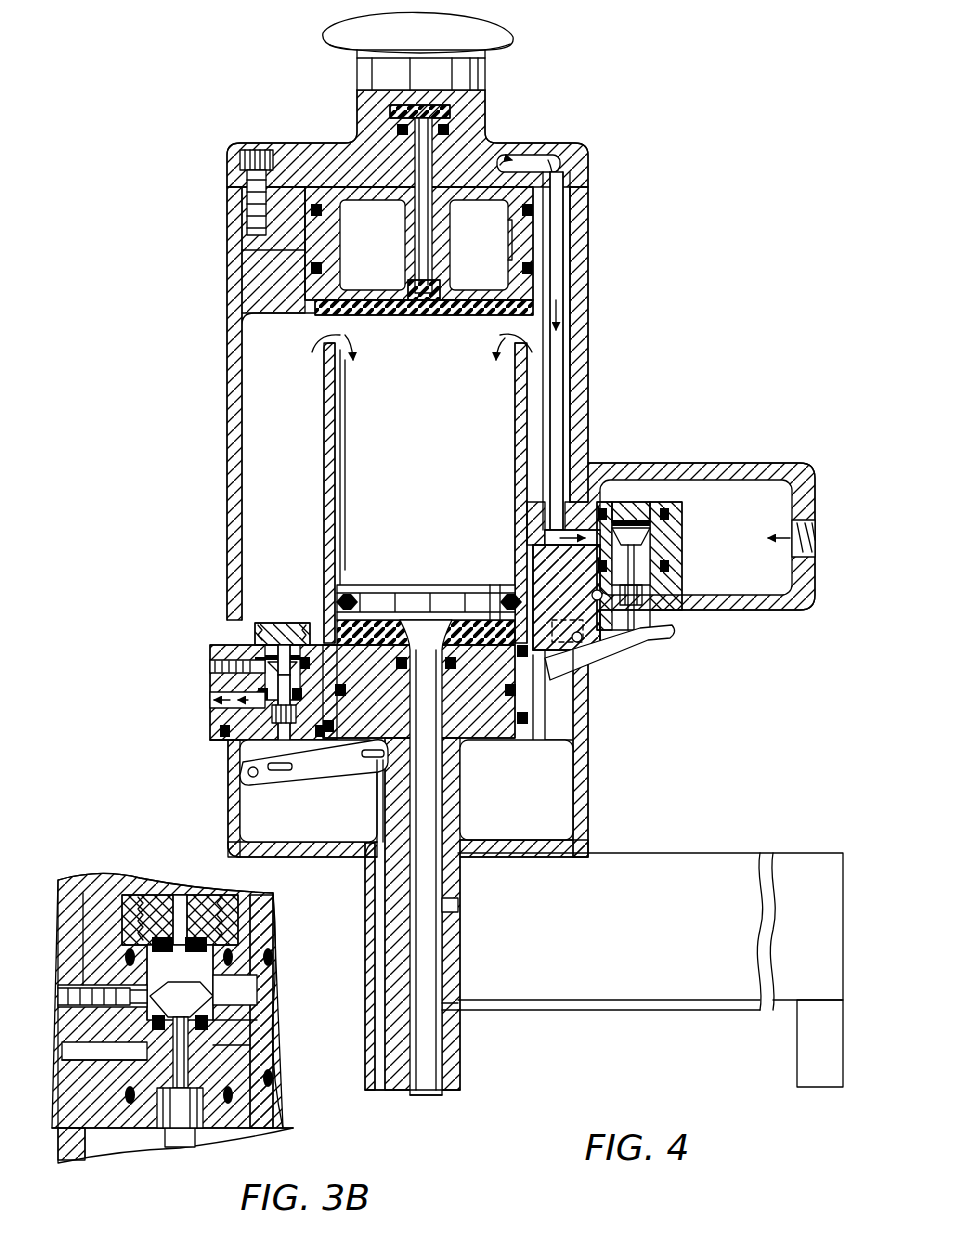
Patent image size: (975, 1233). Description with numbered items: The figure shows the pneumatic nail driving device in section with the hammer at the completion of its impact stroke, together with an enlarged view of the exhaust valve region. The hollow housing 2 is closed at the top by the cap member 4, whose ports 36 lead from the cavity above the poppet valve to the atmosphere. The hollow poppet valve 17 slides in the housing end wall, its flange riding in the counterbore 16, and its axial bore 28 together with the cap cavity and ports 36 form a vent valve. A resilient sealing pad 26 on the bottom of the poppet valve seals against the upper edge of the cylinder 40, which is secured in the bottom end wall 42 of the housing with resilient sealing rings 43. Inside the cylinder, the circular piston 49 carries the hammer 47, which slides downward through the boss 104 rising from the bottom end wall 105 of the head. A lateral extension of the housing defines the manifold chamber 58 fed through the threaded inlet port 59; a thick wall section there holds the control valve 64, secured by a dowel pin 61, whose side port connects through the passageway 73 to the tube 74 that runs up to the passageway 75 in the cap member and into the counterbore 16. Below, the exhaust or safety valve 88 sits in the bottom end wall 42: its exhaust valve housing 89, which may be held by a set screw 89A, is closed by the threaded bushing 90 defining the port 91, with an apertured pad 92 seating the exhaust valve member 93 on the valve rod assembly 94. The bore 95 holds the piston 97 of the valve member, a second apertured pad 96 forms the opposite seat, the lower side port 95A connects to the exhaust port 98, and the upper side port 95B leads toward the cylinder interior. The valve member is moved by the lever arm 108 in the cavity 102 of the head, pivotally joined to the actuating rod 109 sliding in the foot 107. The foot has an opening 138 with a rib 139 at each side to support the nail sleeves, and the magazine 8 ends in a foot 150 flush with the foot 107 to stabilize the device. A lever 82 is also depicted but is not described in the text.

In FIG. 4, the hollow housing 2 is at (226, 373).
In FIG. 4, the cap member 4 is at (302, 140).
In FIG. 4, the passageways or ports 36 is at (490, 112).
In FIG. 4, the counterbore 16 is at (305, 215).
In FIG. 4, the passageway or cavity 75 is at (553, 155).
In FIG. 4, the hollow poppet valve 17 is at (538, 282).
In FIG. 4, the axial bore 28 is at (421, 230).
In FIG. 4, the circular resilient sealing pad 26 is at (320, 318).
In FIG. 4, the tube 74 is at (565, 405).
In FIG. 4, the cylinder 40 is at (322, 432).
In FIG. 3B, the cylinder 40 is at (292, 1117).
In FIG. 4, the manifold chamber 58 is at (752, 490).
In FIG. 4, the inlet port 59 is at (812, 530).
In FIG. 4, the passageway 73 is at (557, 540).
In FIG. 4, the control valve 64 is at (668, 537).
In FIG. 4, the circular piston 49 is at (400, 588).
In FIG. 4, the dowel pin 61 is at (594, 596).
In FIG. 4, the resilient sealing rings 43 is at (582, 718).
In FIG. 4, the lever 82 is at (660, 632).
In FIG. 4, the hammer or driving member 47 is at (430, 1040).
In FIG. 4, the exhaust or safety valve 88 is at (230, 660).
In FIG. 3B, the exhaust or safety valve 88 is at (115, 905).
In FIG. 4, the threaded bushing 90 is at (268, 628).
In FIG. 3B, the threaded bushing 90 is at (150, 903).
In FIG. 4, the port or orifice 91 is at (285, 625).
In FIG. 3B, the port or orifice 91 is at (177, 903).
In FIG. 4, the set screw 89A is at (215, 690).
In FIG. 3B, the set screw 89A is at (102, 990).
In FIG. 4, the exhaust port 98 is at (232, 712).
In FIG. 3B, the exhaust port 98 is at (85, 1050).
In FIG. 4, the valve rod assembly 94 is at (290, 753).
In FIG. 3B, the valve rod assembly 94 is at (178, 1140).
In FIG. 4, the cavity 102 is at (255, 800).
In FIG. 4, the boss 104 is at (460, 800).
In FIG. 4, the bottom end wall 105 is at (545, 835).
In FIG. 4, the lever arm 108 is at (314, 770).
In FIG. 4, the actuating rod 109 is at (380, 790).
In FIG. 4, the magazine 8 is at (710, 852).
In FIG. 4, the foot 150 is at (832, 1058).
In FIG. 4, the rib 139 is at (456, 905).
In FIG. 4, the opening 138 is at (446, 1005).
In FIG. 4, the foot 107 is at (462, 1085).
In FIG. 3B, the bottom end wall 42 is at (252, 925).
In FIG. 3B, the exhaust valve member 93 is at (185, 995).
In FIG. 3B, the apertured pad 92 is at (193, 938).
In FIG. 3B, the exhaust valve housing 89 is at (62, 1036).
In FIG. 3B, the lower side port 95A is at (125, 1050).
In FIG. 3B, the upper side port 95B is at (225, 985).
In FIG. 3B, the apertured pad 96 is at (220, 1020).
In FIG. 3B, the bore 95 is at (192, 1050).
In FIG. 3B, the piston 97 is at (165, 1108).